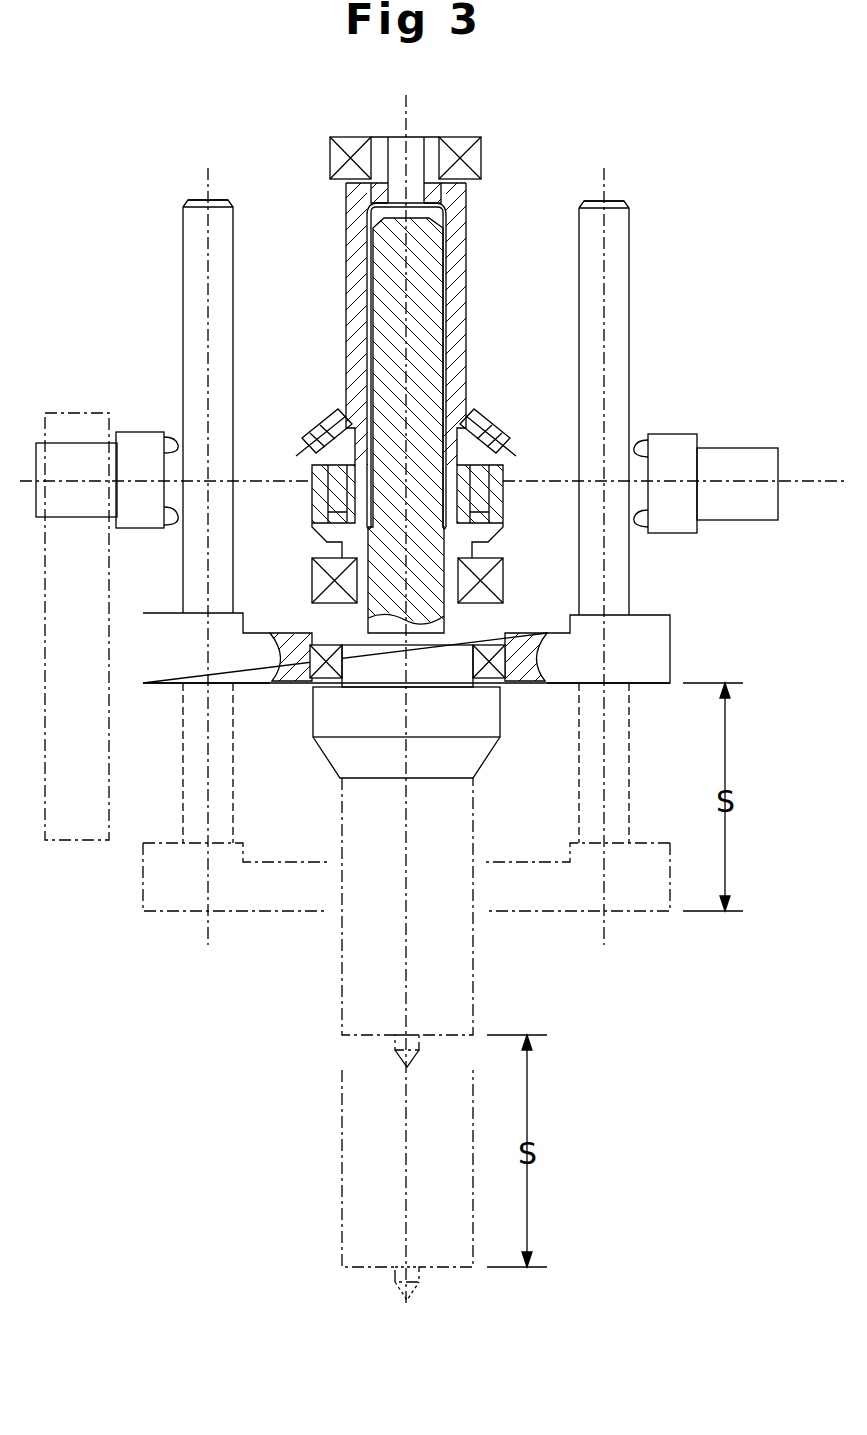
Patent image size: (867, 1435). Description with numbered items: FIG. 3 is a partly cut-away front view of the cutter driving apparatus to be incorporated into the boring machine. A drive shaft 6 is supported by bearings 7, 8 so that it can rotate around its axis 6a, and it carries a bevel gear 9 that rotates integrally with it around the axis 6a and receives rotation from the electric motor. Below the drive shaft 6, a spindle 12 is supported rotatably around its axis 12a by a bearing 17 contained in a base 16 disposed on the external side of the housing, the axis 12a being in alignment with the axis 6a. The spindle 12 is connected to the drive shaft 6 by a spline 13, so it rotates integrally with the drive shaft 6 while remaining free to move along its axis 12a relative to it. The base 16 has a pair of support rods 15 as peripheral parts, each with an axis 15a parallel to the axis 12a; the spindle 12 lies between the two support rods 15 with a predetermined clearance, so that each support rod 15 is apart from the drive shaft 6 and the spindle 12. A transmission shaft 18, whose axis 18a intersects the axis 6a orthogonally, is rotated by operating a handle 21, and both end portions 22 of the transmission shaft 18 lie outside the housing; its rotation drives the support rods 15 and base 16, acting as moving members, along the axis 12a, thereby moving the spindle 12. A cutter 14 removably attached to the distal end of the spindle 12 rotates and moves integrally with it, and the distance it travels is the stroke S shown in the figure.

The drive shaft 6 is at (467, 212).
The axis of drive shaft 6a is at (406, 118).
The bearing 7 is at (483, 158).
The bearing 8 is at (503, 582).
The bevel gear 9 is at (497, 432).
The spindle 12 is at (425, 366).
The axis of spindle 12a is at (410, 708).
The spline 13 is at (446, 290).
The cutter 14 is at (473, 986).
The support rod 15 is at (185, 312).
The axis of support rod 15a is at (205, 193).
The base 16 is at (660, 645).
The bearing 17 is at (296, 642).
The transmission shaft 18 is at (665, 432).
The axis of transmission shaft 18a is at (135, 460).
The handle 21 is at (70, 405).
The end portions of transmission shaft 22 is at (76, 514).